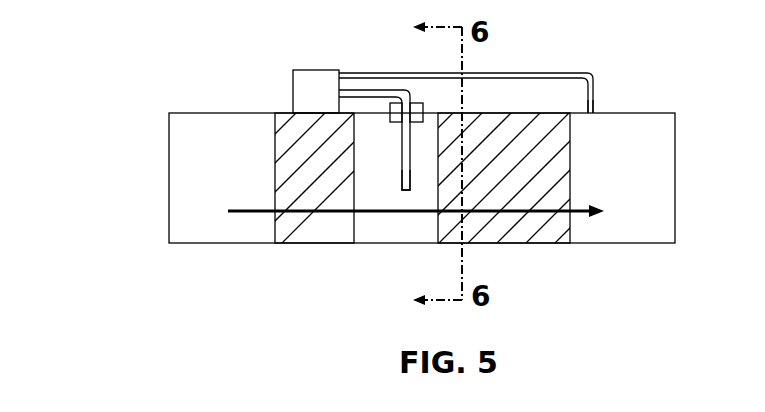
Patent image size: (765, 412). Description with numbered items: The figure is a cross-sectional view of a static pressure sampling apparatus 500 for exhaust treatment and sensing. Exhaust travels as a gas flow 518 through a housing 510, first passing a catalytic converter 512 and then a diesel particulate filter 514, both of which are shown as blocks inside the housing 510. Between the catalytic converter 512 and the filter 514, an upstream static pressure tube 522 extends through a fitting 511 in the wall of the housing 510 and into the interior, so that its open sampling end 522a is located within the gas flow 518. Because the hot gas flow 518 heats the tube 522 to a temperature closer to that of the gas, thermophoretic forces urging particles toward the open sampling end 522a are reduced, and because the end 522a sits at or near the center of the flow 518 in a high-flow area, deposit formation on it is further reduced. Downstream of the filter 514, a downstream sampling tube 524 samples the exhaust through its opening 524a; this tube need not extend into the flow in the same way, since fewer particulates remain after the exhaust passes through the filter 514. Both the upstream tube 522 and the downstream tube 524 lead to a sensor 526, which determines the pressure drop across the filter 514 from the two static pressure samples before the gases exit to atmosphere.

The static pressure sampling apparatus 500 is at (130, 82).
The housing 510 is at (647, 112).
The fitting 511 is at (423, 105).
The catalytic converter 512 is at (313, 244).
The diesel particulate filter 514 is at (520, 244).
The gas flow 518 is at (256, 209).
The upstream static pressure tube 522 is at (362, 90).
The open sampling end 522a is at (407, 191).
The downstream sampling tube 524 is at (515, 72).
The opening 524a is at (600, 106).
The sensor 526 is at (336, 103).